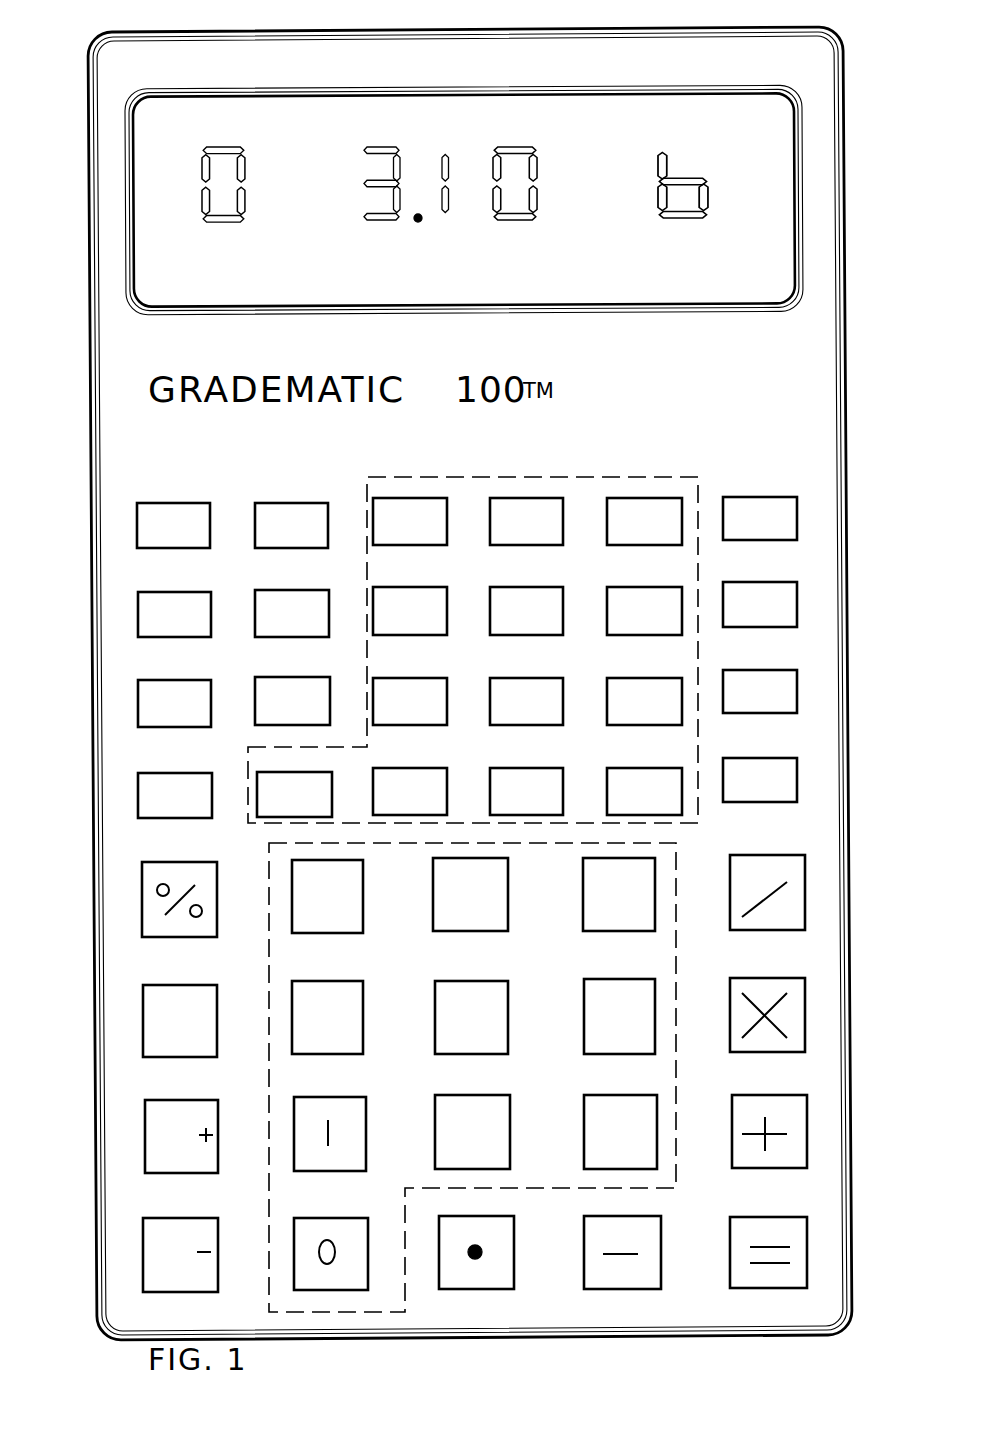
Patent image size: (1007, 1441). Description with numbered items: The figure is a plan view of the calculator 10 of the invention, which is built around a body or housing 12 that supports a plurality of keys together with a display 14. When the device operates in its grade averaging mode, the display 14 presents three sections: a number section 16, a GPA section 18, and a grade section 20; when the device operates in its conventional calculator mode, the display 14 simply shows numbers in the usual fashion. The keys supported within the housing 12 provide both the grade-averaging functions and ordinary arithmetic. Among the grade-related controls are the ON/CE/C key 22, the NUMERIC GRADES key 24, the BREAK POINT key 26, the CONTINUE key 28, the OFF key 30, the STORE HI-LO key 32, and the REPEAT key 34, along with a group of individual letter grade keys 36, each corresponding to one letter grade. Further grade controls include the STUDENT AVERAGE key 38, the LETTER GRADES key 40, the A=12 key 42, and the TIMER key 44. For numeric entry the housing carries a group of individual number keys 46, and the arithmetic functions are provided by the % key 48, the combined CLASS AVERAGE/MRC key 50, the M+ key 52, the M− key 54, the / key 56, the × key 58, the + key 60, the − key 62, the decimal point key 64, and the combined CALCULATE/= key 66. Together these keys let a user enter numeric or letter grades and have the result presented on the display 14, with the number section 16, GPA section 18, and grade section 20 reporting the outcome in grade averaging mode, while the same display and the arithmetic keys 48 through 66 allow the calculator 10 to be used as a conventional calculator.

The calculator 10 is at (866, 326).
The body or housing 12 is at (840, 452).
The display 14 is at (797, 147).
The number section 16 is at (230, 147).
The GPA section 18 is at (456, 128).
The grade section 20 is at (683, 155).
The ON/CE/C key 22 is at (137, 532).
The NUMERIC GRADES key 24 is at (138, 617).
The BREAK POINT key 26 is at (138, 710).
The CONTINUE key 28 is at (138, 797).
The OFF key 30 is at (318, 503).
The STORE HI-LO key 32 is at (329, 600).
The REPEAT key 34 is at (258, 725).
The individual letter grade keys 36 is at (610, 477).
The STUDENT AVERAGE key 38 is at (797, 517).
The LETTER GRADES key 40 is at (797, 600).
The A=12 key 42 is at (797, 690).
The TIMER key 44 is at (797, 783).
The individual number keys 46 is at (673, 872).
The % key 48 is at (142, 903).
The CLASS AVERAGE/MRC key 50 is at (143, 1031).
The M+ key 52 is at (145, 1142).
The M− key 54 is at (143, 1267).
The / key 56 is at (805, 888).
The × key 58 is at (805, 1012).
The + key 60 is at (807, 1132).
The − key 62 is at (613, 1290).
The . key 64 is at (478, 1290).
The CALCULATE/= key 66 is at (807, 1248).